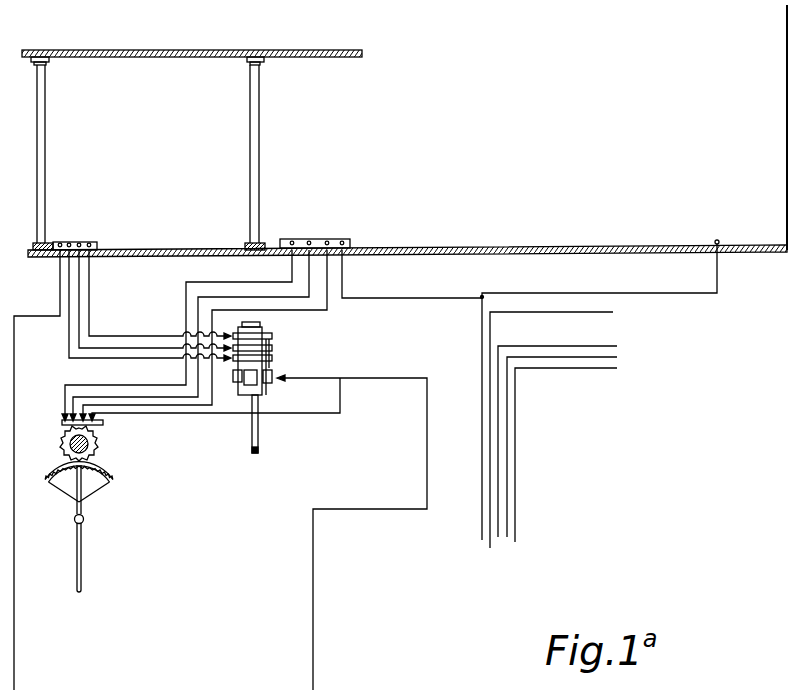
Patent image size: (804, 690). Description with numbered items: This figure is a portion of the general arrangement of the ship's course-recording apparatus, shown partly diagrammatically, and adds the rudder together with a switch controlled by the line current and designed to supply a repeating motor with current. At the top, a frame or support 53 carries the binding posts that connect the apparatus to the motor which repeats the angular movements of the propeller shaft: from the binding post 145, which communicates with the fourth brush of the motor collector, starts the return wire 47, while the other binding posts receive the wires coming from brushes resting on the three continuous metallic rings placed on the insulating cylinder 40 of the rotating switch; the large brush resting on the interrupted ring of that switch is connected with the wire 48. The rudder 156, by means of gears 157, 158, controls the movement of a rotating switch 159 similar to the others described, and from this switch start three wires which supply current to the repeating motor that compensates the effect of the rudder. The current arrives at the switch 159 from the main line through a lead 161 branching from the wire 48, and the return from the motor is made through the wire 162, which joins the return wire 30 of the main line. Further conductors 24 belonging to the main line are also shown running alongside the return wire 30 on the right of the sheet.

The support bar 53 is at (186, 49).
The binding post 145 is at (61, 241).
The return wire 47 is at (38, 313).
The wire 162 is at (408, 292).
The return wire 30 is at (566, 288).
The conductor 24 is at (584, 312).
The wire 48 is at (315, 379).
The lead 161 is at (189, 413).
The insulating cylinder 40 is at (246, 392).
The gear 158 is at (63, 444).
The rotating switch 159 is at (95, 444).
The gear 157 is at (113, 477).
The rudder 156 is at (83, 557).